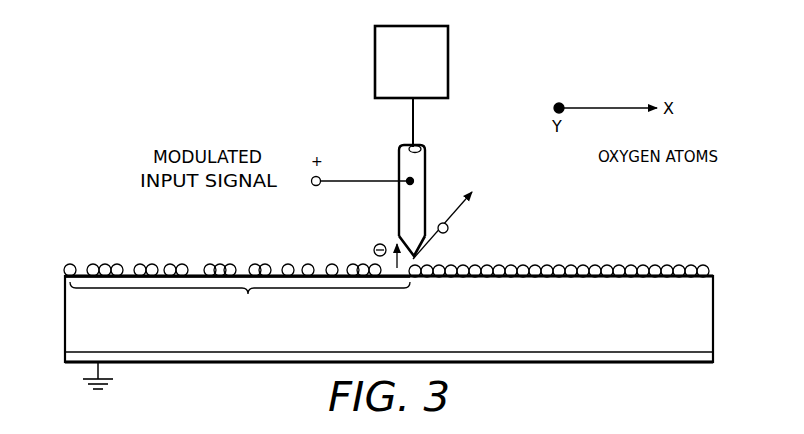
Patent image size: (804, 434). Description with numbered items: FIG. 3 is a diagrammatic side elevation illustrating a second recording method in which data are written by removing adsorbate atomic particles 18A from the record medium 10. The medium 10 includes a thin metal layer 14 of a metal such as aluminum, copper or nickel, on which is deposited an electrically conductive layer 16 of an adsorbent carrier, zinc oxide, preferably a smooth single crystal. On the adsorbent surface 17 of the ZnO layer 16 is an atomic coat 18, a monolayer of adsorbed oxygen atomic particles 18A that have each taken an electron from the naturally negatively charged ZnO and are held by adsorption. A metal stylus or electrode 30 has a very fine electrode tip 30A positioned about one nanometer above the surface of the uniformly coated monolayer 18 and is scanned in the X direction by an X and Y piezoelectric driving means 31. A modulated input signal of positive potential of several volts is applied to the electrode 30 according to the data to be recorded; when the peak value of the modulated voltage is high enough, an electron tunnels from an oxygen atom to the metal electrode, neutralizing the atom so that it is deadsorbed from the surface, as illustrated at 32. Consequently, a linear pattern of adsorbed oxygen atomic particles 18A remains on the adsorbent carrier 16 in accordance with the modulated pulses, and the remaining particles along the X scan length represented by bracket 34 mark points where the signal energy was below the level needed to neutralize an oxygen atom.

The medium 10 is at (652, 255).
The thin metal layer 14 is at (65, 360).
The electrically conductive layer of adsorbent carrier 16 is at (65, 306).
The adsorbent surface 17 is at (201, 267).
The atomic coat 18 is at (65, 270).
The adsorbate atomic particles 18A is at (121, 266).
The metal stylus or electrode 30 is at (426, 154).
The electrode tip 30A is at (416, 253).
The X and Y piezoelectric driving means 31 is at (375, 57).
The deadsorption of neutralized atom 32 is at (448, 229).
The bracket representing X scan length 34 is at (240, 300).